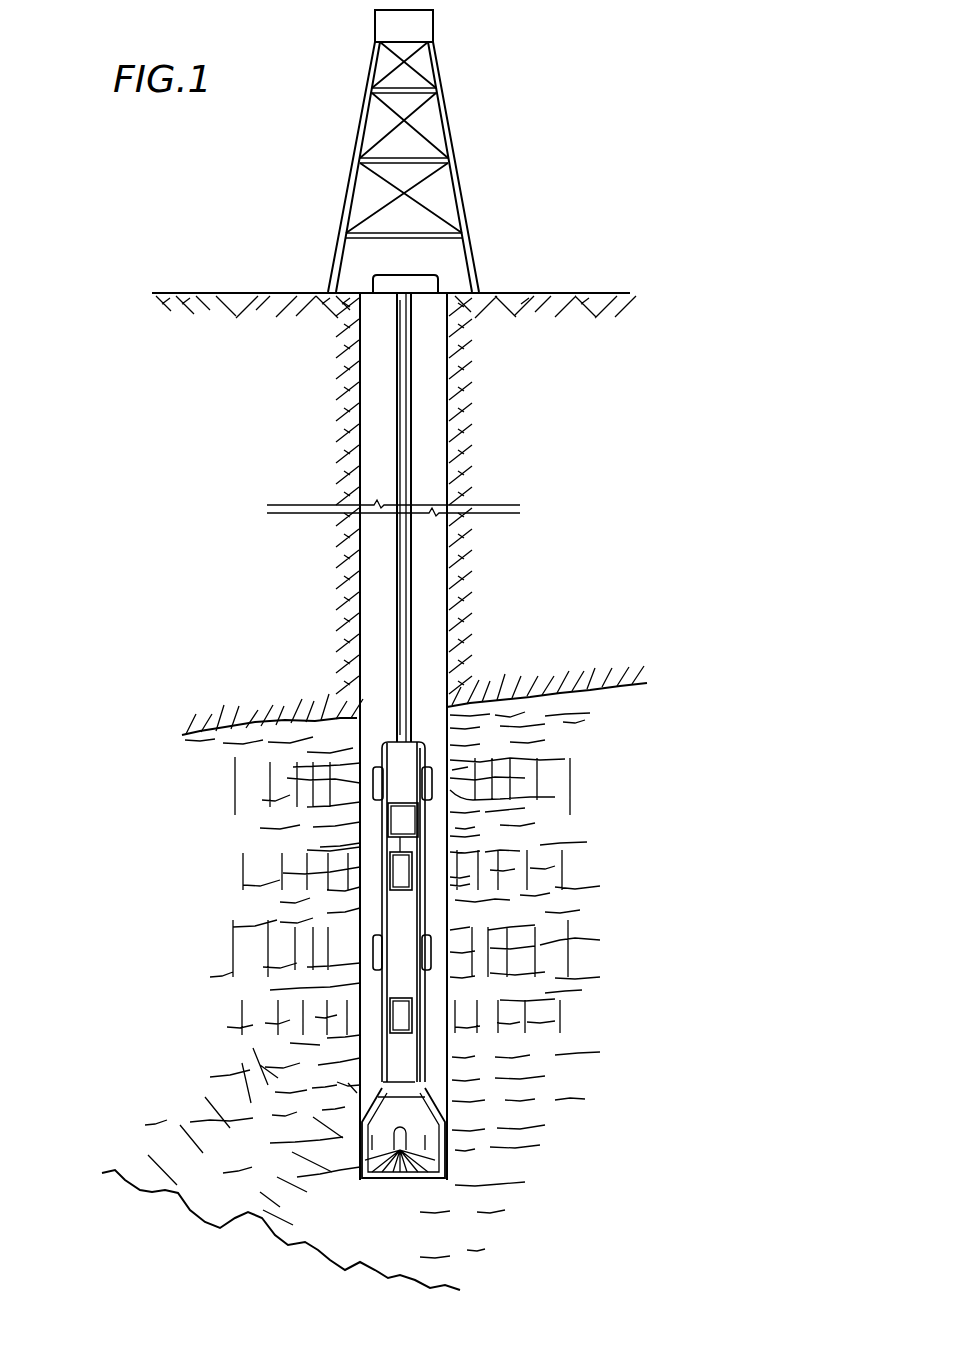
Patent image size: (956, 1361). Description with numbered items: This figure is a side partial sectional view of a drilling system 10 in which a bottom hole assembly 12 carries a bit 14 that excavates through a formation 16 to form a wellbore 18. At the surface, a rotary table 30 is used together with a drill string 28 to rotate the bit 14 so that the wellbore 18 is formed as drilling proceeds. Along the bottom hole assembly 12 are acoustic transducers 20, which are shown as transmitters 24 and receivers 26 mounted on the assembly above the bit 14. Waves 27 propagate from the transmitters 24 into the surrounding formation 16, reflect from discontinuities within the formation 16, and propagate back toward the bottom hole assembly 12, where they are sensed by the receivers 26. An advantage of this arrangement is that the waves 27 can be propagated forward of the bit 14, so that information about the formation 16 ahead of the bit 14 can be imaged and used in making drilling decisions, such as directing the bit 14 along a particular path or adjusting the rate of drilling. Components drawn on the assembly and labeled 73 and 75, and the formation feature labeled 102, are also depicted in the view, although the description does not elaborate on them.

The drilling system 10 is at (422, 435).
The bottom hole assembly 12 is at (427, 725).
The bit 14 is at (425, 1140).
The formation 16 is at (465, 1227).
The wellbore 18 is at (428, 615).
The acoustic transducers 20 is at (373, 770).
The transmitters 24 is at (373, 950).
The receivers 26 is at (412, 1018).
The waves 27 is at (579, 780).
The drill string 28 is at (412, 577).
The rotary table 30 is at (437, 276).
The downhole tool 73 is at (384, 813).
The downhole tool 75 is at (400, 847).
The formation boundary 102 is at (162, 1193).